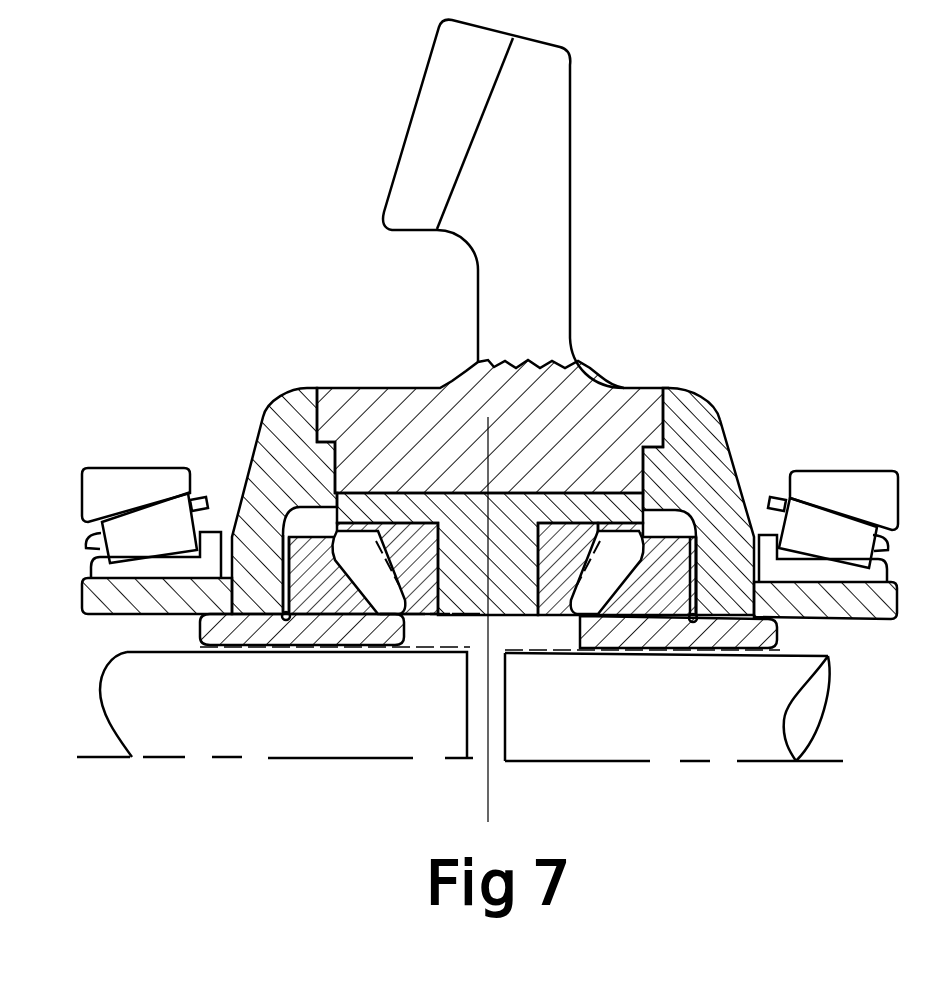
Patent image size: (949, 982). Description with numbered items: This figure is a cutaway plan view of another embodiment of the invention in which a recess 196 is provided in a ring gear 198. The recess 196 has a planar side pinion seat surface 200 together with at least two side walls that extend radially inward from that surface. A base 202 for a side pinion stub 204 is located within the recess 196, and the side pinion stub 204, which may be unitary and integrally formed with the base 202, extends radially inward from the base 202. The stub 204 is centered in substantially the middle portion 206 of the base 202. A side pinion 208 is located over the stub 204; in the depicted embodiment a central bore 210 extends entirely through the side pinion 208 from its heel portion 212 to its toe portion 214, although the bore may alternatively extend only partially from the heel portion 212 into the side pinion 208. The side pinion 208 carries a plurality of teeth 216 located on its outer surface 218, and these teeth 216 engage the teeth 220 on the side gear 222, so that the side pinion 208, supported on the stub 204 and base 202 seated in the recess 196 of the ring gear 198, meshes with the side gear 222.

The recess 196 is at (583, 493).
The ring gear 198 is at (568, 165).
The planar side pinion seat surface 200 is at (398, 492).
The base 202 is at (615, 508).
The side pinion stub 204 is at (498, 614).
The middle portion 206 is at (517, 510).
The side pinion 208 is at (442, 614).
The central bore 210 is at (458, 614).
The heel portion 212 is at (423, 531).
The toe portion 214 is at (571, 600).
The teeth 216 is at (632, 545).
The outer surface 218 is at (636, 584).
The teeth 220 is at (402, 614).
The side gear 222 is at (258, 636).